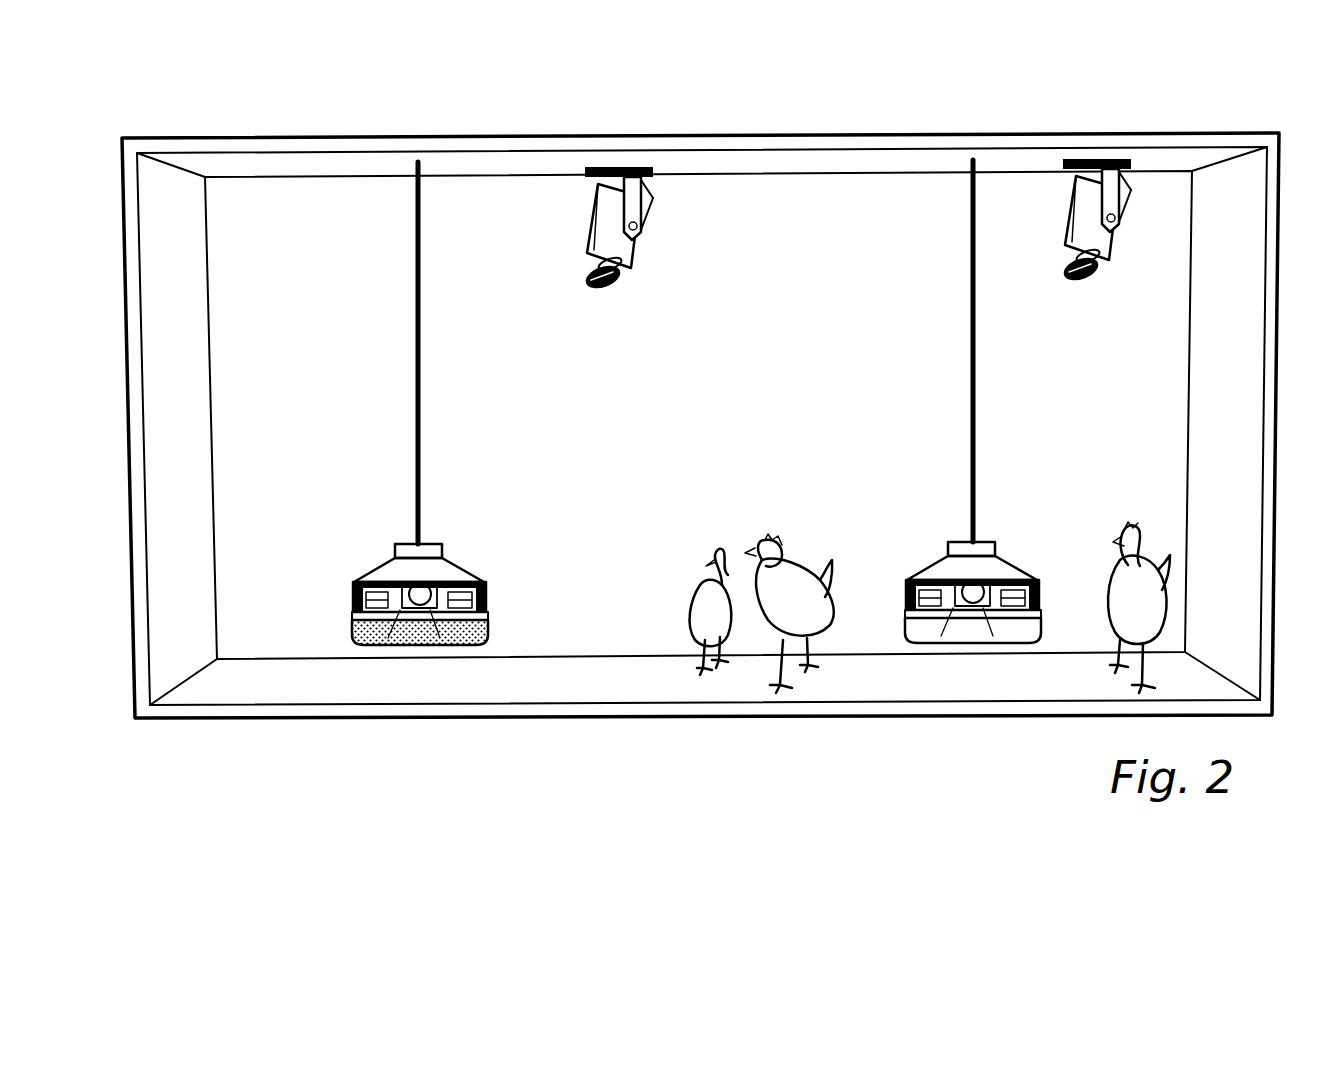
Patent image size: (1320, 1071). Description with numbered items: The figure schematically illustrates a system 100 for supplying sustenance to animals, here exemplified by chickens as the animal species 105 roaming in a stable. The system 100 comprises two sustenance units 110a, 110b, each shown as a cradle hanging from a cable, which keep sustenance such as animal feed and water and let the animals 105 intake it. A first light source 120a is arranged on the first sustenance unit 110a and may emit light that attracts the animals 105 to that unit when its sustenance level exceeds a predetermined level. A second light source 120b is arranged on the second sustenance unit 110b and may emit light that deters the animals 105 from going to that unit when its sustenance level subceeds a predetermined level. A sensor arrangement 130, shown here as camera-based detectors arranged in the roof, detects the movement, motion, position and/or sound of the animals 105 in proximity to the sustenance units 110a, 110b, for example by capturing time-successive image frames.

The system for supplying sustenance to animals 100 is at (818, 198).
The animal species 105 is at (1108, 528).
The first sustenance unit 110a is at (400, 403).
The second sustenance unit 110b is at (909, 401).
The first light source 120a is at (425, 590).
The second light source 120b is at (965, 586).
The sensor arrangement 130 is at (656, 282).